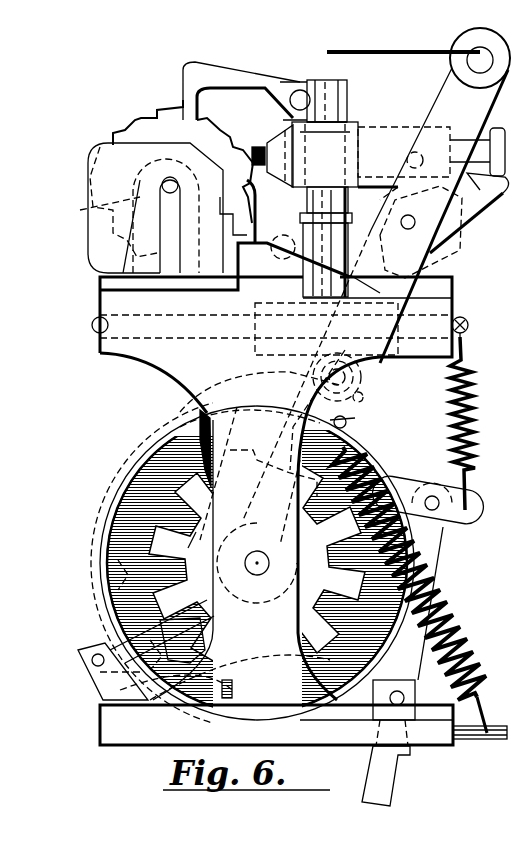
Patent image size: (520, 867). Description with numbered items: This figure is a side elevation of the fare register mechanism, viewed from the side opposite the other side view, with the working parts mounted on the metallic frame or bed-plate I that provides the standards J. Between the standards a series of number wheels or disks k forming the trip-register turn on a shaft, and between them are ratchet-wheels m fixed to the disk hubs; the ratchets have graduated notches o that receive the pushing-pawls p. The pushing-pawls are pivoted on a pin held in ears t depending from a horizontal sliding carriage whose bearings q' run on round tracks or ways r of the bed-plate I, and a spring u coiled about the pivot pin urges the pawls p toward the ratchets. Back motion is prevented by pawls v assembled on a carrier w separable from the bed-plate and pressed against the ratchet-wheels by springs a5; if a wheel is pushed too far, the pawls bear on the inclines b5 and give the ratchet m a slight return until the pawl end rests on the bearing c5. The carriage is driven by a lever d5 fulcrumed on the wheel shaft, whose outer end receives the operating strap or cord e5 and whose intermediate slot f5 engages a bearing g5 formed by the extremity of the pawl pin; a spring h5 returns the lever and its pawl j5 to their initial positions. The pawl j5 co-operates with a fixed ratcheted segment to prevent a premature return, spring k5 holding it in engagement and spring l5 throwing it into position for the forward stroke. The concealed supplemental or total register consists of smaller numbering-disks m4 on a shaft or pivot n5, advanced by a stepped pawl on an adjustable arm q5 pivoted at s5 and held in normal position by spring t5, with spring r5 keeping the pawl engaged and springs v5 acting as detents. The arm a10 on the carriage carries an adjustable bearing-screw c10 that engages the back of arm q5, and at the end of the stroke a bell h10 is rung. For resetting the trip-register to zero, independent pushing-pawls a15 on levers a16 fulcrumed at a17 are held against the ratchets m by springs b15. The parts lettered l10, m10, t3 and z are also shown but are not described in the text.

The operating strap or cord e5 is at (403, 41).
The lever d5 is at (376, 274).
The vertical shaft l10 is at (349, 105).
The arm a10 is at (358, 150).
The spring k5 is at (424, 173).
The spring l5 is at (388, 188).
The pawl j5 is at (421, 232).
The adjustable bearing-screw c10 is at (470, 213).
The numbering-disks m4 is at (170, 186).
The shaft or pivot n5 is at (163, 183).
The housing outline m10 is at (108, 202).
The lever arm t3 is at (214, 92).
The springs v5 is at (260, 210).
The adjustable arm q5 is at (281, 238).
The pivot s5 is at (283, 241).
The spring t5 is at (247, 216).
The spring r5 is at (340, 276).
The frame or bed-plate I is at (276, 511).
The bearings q' is at (317, 322).
The tracks or ways r is at (92, 325).
The standards J is at (153, 383).
The pushing-pawls p is at (200, 415).
The bell h10 is at (157, 446).
The ratchet-wheels m is at (257, 563).
The number wheels or disks k is at (124, 574).
The graduated notches o is at (196, 540).
The pivot z is at (252, 572).
The spring u is at (282, 423).
The ears t is at (362, 378).
The bearing g5 is at (372, 400).
The bearing c5 is at (360, 418).
The slot f5 is at (347, 424).
The spring h5 is at (458, 617).
The springs b15 is at (476, 407).
The pushing-pawls a15 is at (404, 484).
The levers a16 is at (446, 545).
The fulcrum a17 is at (404, 698).
The carrier w is at (146, 650).
The pawls v is at (182, 650).
The inclines b5 is at (166, 649).
The springs a5 is at (240, 690).